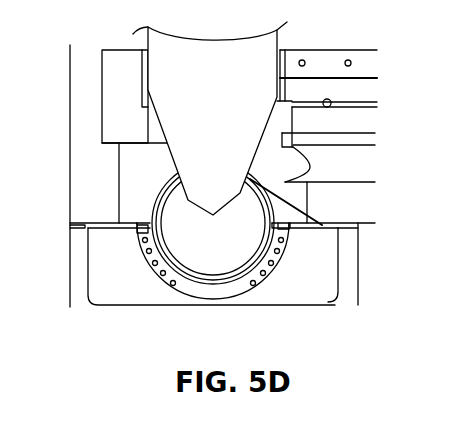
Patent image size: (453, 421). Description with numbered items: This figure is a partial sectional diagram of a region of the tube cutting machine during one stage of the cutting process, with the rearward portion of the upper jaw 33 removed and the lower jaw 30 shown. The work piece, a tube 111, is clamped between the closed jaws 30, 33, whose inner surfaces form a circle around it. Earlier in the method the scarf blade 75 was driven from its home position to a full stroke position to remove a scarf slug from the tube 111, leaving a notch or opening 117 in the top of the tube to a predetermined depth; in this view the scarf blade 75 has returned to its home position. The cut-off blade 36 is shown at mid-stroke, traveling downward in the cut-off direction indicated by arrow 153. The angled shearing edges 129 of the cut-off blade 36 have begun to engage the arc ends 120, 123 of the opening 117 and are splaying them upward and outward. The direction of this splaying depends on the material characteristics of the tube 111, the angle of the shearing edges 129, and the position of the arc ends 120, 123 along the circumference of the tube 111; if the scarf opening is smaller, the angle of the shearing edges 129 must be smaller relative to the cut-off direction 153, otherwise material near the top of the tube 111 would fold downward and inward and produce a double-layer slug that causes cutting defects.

The lower jaw 30 is at (110, 283).
The upper jaw 33 is at (140, 174).
The cut-off blade 36 is at (222, 126).
The scarf blade 75 is at (333, 170).
The tube 111 is at (280, 251).
The opening 117 is at (187, 205).
The arc end 120 is at (176, 176).
The arc end 123 is at (330, 223).
The shearing edges 129 is at (168, 157).
The direction of arrow 153 is at (213, 221).